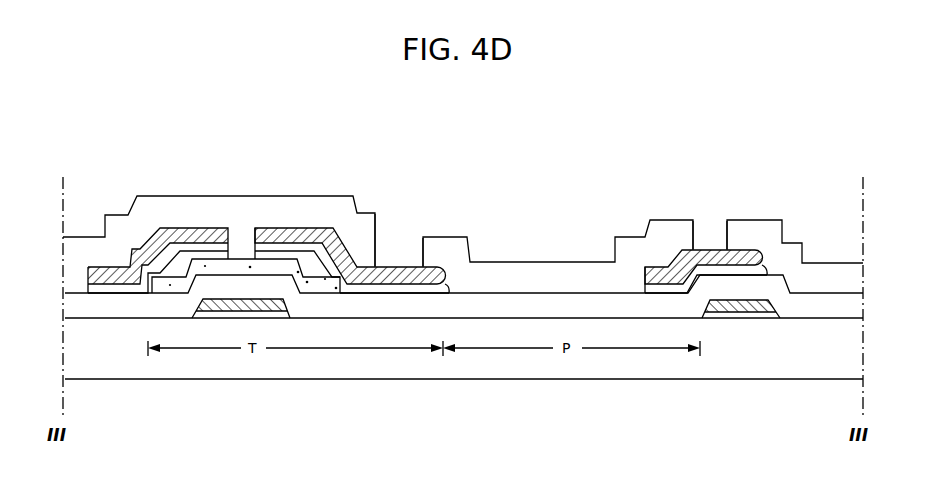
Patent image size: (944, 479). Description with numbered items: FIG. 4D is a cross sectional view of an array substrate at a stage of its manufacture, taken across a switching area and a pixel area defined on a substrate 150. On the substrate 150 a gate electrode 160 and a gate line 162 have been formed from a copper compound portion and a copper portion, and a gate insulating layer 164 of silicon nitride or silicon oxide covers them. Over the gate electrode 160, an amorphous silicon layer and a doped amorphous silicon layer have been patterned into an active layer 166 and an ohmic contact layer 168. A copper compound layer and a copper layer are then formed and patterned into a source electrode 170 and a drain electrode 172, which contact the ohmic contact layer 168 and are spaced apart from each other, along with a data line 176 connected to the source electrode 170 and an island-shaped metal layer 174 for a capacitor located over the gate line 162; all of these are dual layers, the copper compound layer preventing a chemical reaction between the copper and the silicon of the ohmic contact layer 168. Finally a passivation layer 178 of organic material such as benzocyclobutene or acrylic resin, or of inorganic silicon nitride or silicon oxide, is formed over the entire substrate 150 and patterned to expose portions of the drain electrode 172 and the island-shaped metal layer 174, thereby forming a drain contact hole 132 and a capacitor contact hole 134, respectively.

The drain contact hole 132 is at (398, 238).
The capacitor contact hole 134 is at (711, 226).
The substrate 150 is at (836, 357).
The gate electrode 160 is at (197, 318).
The gate line 162 is at (781, 318).
The gate insulating layer 164 is at (507, 293).
The active layer 166 is at (335, 288).
The ohmic contact layer 168 is at (288, 246).
The source electrode 170 is at (233, 243).
The drain electrode 172 is at (450, 277).
The island-shaped metal layer 174 is at (770, 258).
The data line 176 is at (108, 266).
The passivation layer 178 is at (245, 258).